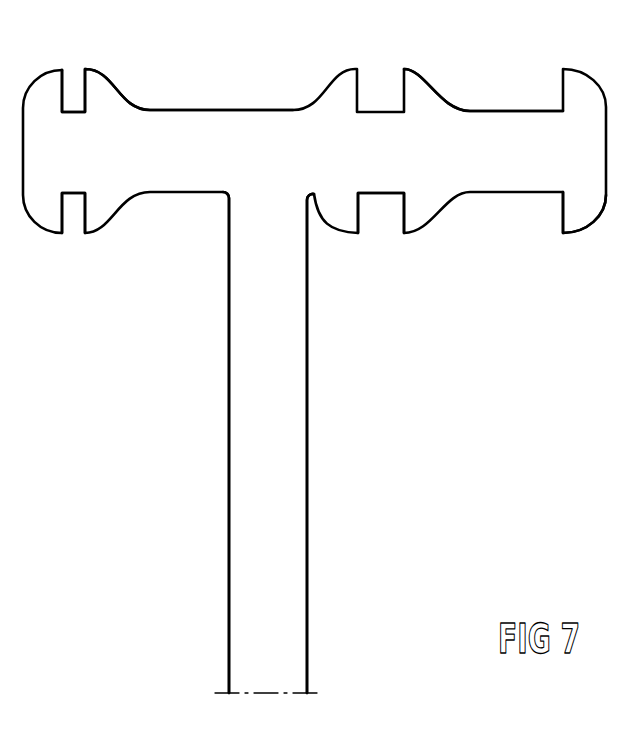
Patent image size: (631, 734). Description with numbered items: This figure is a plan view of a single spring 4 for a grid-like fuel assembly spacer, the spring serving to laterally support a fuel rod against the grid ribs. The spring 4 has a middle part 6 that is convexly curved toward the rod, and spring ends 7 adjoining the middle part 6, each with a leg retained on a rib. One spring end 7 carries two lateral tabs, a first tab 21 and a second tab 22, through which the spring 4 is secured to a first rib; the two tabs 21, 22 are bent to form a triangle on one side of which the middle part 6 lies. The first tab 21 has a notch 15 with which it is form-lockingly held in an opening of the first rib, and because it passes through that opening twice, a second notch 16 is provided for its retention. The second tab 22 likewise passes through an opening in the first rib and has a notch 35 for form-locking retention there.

The spring 4 is at (241, 620).
The middle part 6 is at (298, 520).
The spring end 7 is at (250, 198).
The notch 15 is at (378, 207).
The second notch 16 is at (553, 205).
The first tab 21 is at (510, 132).
The second tab 22 is at (170, 133).
The notch 35 is at (76, 218).